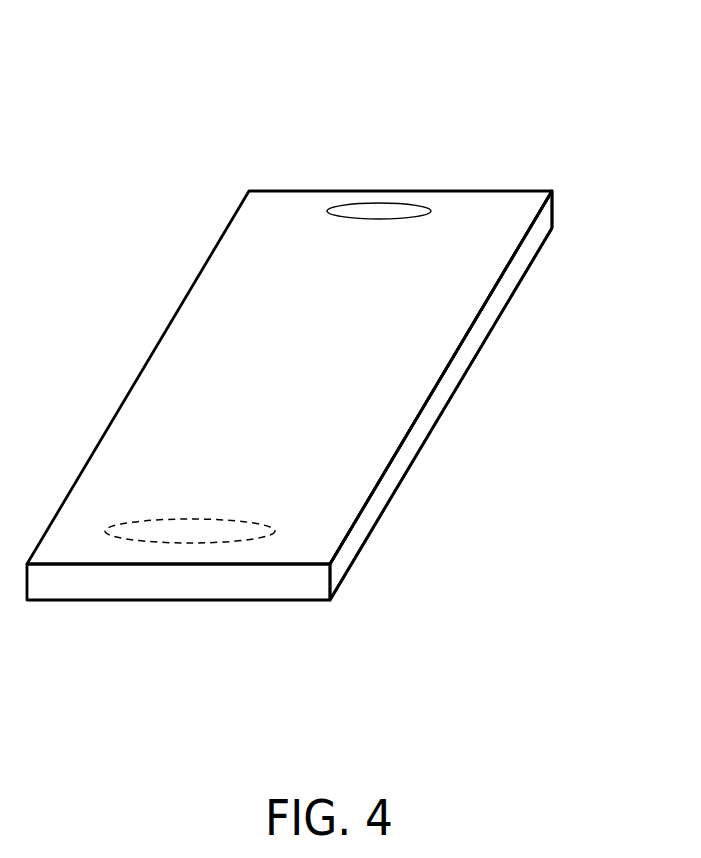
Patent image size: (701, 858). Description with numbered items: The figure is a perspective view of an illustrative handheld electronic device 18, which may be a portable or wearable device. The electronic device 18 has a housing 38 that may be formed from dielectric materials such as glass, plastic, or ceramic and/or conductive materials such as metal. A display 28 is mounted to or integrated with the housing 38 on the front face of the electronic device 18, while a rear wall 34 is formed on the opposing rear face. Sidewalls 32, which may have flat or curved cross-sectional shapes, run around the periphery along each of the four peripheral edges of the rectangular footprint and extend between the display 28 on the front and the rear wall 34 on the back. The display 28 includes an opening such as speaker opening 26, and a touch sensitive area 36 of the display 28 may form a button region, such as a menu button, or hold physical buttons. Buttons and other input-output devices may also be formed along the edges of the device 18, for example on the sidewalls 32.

The electronic device 18 is at (536, 91).
The speaker opening 26 is at (382, 208).
The display 28 is at (443, 302).
The sidewalls 32 is at (453, 373).
The rear wall 34 is at (371, 570).
The area 36 is at (185, 533).
The housing 38 is at (550, 200).